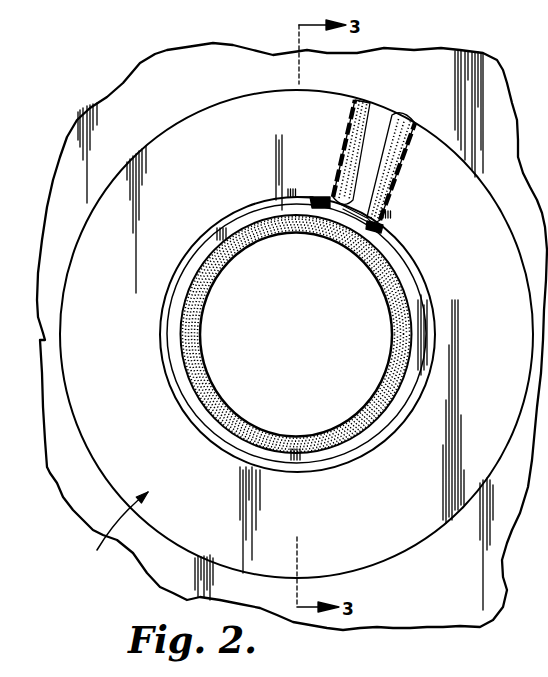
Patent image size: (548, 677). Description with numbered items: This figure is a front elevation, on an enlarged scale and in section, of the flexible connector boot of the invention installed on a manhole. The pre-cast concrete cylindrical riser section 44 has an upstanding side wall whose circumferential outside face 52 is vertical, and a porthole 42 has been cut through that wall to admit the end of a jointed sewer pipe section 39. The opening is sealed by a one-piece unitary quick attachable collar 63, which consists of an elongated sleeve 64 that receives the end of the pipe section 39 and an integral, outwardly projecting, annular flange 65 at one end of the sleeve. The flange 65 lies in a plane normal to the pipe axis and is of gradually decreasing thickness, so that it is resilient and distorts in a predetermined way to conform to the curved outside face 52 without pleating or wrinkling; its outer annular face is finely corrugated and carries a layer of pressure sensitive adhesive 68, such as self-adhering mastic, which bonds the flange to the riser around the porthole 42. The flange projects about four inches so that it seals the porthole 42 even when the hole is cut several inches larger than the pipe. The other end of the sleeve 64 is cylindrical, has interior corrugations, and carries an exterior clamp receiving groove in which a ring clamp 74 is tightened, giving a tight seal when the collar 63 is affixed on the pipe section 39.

The cylindrical riser section 44 is at (125, 80).
The layer of pressure sensitive adhesive 68 is at (389, 127).
The ring clamp 74 is at (346, 217).
The porthole 42 is at (352, 386).
The pipe section 39 is at (213, 420).
The elongated sleeve 64 is at (170, 390).
The quick attachable collar 63 is at (109, 532).
The annular flange 65 is at (397, 526).
The outside face 52 is at (451, 594).